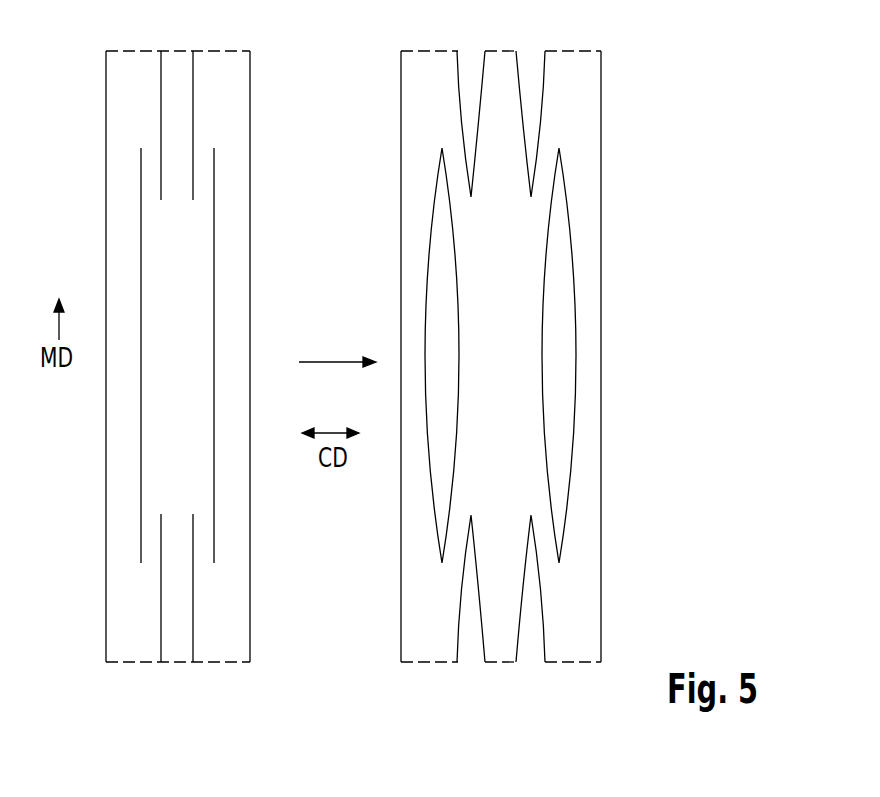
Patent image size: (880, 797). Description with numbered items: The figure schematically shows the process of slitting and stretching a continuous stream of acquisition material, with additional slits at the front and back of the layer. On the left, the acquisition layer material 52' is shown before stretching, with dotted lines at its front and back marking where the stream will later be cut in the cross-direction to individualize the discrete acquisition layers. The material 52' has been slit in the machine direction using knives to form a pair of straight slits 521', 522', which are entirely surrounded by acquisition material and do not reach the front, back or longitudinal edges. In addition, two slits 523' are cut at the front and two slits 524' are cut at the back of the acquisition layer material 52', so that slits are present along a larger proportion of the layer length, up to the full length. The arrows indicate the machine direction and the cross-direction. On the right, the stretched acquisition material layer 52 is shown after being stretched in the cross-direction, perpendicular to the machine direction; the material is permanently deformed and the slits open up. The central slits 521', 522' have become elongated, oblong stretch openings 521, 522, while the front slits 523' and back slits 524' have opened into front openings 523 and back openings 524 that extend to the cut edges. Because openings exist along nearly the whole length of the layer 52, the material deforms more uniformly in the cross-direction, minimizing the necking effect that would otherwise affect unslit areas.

The acquisition layer material 52' is at (134, 356).
The slit 521' is at (95, 355).
The slit 522' is at (262, 355).
The front slits 523' is at (177, 100).
The back slits 524' is at (177, 614).
The stretched acquisition material layer 52 is at (545, 356).
The stretch opening 521 is at (396, 355).
The stretch opening 522 is at (608, 355).
The front stretch openings 523 is at (501, 98).
The back stretch openings 524 is at (501, 618).